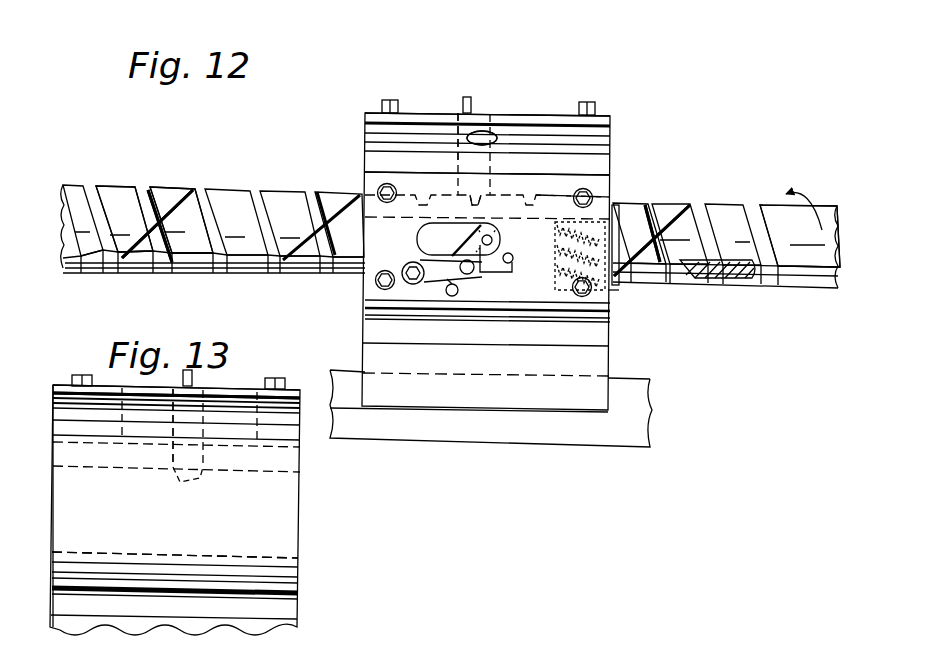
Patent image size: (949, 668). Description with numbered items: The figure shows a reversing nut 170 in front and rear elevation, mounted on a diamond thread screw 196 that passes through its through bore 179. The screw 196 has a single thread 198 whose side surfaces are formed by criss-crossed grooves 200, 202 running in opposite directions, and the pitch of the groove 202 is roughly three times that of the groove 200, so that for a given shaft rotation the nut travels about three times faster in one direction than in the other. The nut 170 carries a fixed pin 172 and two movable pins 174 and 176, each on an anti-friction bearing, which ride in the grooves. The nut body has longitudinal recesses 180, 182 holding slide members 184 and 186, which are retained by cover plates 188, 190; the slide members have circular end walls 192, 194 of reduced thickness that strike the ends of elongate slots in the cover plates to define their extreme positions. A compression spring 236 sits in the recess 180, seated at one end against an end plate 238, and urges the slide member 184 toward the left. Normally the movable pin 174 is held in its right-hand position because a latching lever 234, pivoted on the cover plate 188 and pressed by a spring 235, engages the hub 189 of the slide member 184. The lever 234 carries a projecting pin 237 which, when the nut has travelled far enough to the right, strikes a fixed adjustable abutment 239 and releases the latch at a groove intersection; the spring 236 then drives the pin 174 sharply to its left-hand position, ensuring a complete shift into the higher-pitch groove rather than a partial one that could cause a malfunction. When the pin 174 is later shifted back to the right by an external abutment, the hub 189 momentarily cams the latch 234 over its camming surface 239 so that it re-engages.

In FIG. 12, the reversing nut 170 is at (646, 128).
In FIG. 13, the reversing nut 170 is at (306, 490).
In FIG. 12, the fixed pin 172 is at (481, 192).
In FIG. 12, the movable pin 174 is at (494, 241).
In FIG. 12, the movable pin 176 is at (498, 162).
In FIG. 13, the movable pin 176 is at (208, 470).
In FIG. 12, the through bore 179 is at (569, 194).
In FIG. 13, the through bore 179 is at (278, 556).
In FIG. 12, the longitudinal recess 180 is at (612, 289).
In FIG. 13, the longitudinal recess 182 is at (70, 430).
In FIG. 12, the slide member 184 is at (418, 262).
In FIG. 13, the slide member 186 is at (150, 420).
In FIG. 12, the cover plate 188 is at (418, 181).
In FIG. 12, the hub 189 is at (490, 278).
In FIG. 12, the cover plate 190 is at (456, 112).
In FIG. 13, the cover plate 190 is at (294, 392).
In FIG. 12, the circular end wall 192 is at (484, 228).
In FIG. 12, the circular end wall 194 is at (458, 113).
In FIG. 13, the circular end wall 194 is at (172, 393).
In FIG. 12, the diamond thread screw 196 is at (247, 180).
In FIG. 12, the single thread 198 is at (169, 196).
In FIG. 12, the groove 200 is at (150, 205).
In FIG. 12, the groove 202 is at (135, 254).
In FIG. 12, the latching lever 234 is at (483, 277).
In FIG. 12, the spring 235 is at (440, 285).
In FIG. 12, the compression spring 236 is at (566, 272).
In FIG. 12, the projecting pin 237 is at (467, 275).
In FIG. 12, the end plate 238 is at (614, 208).
In FIG. 12, the fixed adjustable abutment 239 is at (447, 256).